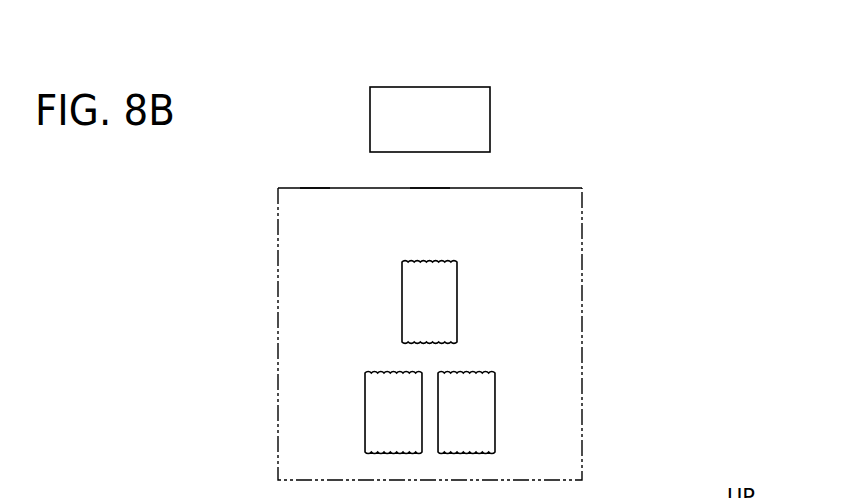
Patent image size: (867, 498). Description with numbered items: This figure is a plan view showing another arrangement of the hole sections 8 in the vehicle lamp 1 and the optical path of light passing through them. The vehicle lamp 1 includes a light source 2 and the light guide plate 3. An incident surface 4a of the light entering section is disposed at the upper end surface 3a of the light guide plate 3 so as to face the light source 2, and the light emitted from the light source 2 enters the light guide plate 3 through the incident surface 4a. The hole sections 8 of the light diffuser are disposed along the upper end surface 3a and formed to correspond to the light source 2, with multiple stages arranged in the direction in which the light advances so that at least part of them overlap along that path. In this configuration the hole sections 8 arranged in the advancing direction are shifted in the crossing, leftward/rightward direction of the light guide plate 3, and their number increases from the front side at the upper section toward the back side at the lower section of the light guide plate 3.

The vehicle lamp 1 is at (618, 140).
The light source 2 is at (490, 117).
The light guide plate 3 is at (278, 320).
The upper end surface 3a is at (313, 187).
The incident surface 4a is at (430, 188).
The hole section 8 is at (457, 302).